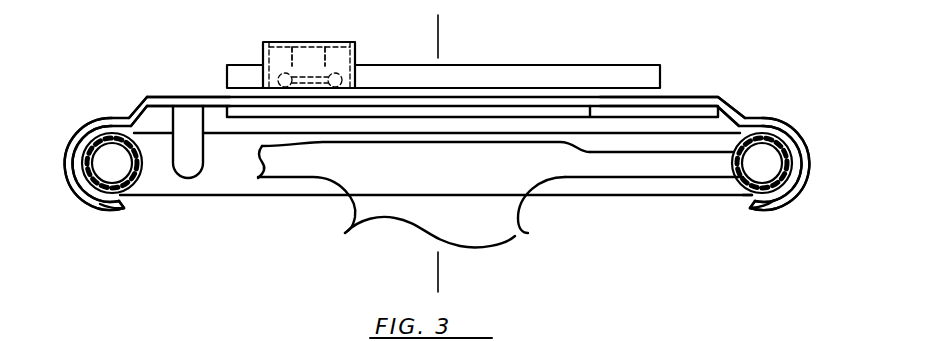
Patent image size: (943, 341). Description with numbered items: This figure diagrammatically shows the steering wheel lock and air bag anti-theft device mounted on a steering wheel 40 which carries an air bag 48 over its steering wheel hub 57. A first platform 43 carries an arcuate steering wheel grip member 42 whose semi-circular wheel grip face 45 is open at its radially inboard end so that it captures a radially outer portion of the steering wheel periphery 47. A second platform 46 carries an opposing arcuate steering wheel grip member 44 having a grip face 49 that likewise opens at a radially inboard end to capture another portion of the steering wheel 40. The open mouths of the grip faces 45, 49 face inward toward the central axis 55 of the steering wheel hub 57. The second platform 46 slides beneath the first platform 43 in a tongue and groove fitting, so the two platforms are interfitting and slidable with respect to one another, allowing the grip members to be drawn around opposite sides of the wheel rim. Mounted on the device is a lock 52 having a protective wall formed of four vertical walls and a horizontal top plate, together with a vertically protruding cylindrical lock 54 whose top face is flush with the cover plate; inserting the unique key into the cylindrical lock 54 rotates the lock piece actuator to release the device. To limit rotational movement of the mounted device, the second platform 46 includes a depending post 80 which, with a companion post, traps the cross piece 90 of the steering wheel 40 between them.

The steering wheel 40 is at (632, 179).
The steering wheel grip member 42 is at (807, 174).
The first platform 43 is at (721, 90).
The steering wheel grip member 44 is at (72, 140).
The wheel grip face 45 is at (781, 198).
The second platform 46 is at (144, 94).
The steering wheel periphery 47 is at (742, 198).
The air bag 48 is at (572, 137).
The grip face 49 is at (93, 207).
The lock 52 is at (357, 48).
The cylindrical lock 54 is at (325, 42).
The central axis 55 is at (439, 263).
The steering wheel hub 57 is at (522, 207).
The depending post 80 is at (205, 157).
The cross piece 90 is at (275, 178).